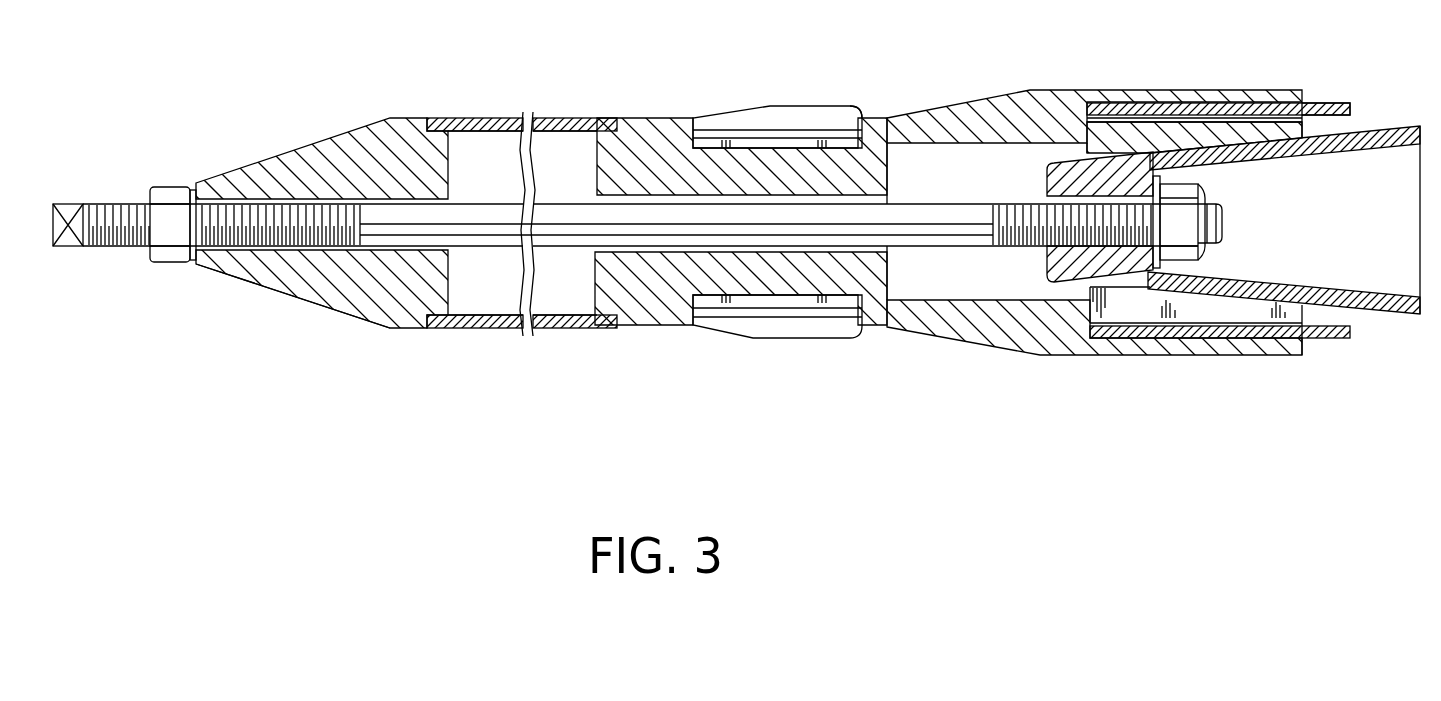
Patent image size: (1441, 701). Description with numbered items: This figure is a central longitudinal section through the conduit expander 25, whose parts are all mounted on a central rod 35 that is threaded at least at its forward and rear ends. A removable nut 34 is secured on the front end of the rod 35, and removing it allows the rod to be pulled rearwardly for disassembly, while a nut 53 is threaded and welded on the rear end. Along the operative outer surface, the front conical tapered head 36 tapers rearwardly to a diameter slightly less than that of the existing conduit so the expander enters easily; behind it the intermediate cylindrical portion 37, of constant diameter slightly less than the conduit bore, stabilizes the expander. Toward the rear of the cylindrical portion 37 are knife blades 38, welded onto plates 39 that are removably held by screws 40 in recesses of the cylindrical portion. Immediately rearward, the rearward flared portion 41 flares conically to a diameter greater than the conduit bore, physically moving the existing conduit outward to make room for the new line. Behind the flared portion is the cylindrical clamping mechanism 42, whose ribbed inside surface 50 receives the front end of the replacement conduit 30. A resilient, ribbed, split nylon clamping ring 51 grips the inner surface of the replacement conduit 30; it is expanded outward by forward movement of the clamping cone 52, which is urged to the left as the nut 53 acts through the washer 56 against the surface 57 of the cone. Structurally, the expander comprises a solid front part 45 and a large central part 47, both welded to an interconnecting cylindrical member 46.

The expander 25 is at (840, 403).
The replacement conduit 30 is at (1346, 101).
The nut 34 is at (173, 258).
The central rod 35 is at (112, 205).
The front conical tapered head 36 is at (272, 153).
The intermediate cylindrical portion 37 is at (498, 113).
The knife blades 38 is at (774, 108).
The plates 39 is at (747, 150).
The screws 40 is at (848, 116).
The rearward flared portion 41 is at (1015, 357).
The cylindrical clamping mechanism 42 is at (1235, 357).
The solid front part 45 is at (326, 287).
The cylindrical member 46 is at (478, 330).
The large central part 47 is at (648, 298).
The ribbed inside surface 50 is at (1273, 100).
The clamping ring 51 is at (1150, 138).
The clamping cone 52 is at (1372, 150).
The nut 53 is at (1198, 188).
The washer 56 is at (1158, 272).
The surface 57 is at (1152, 290).